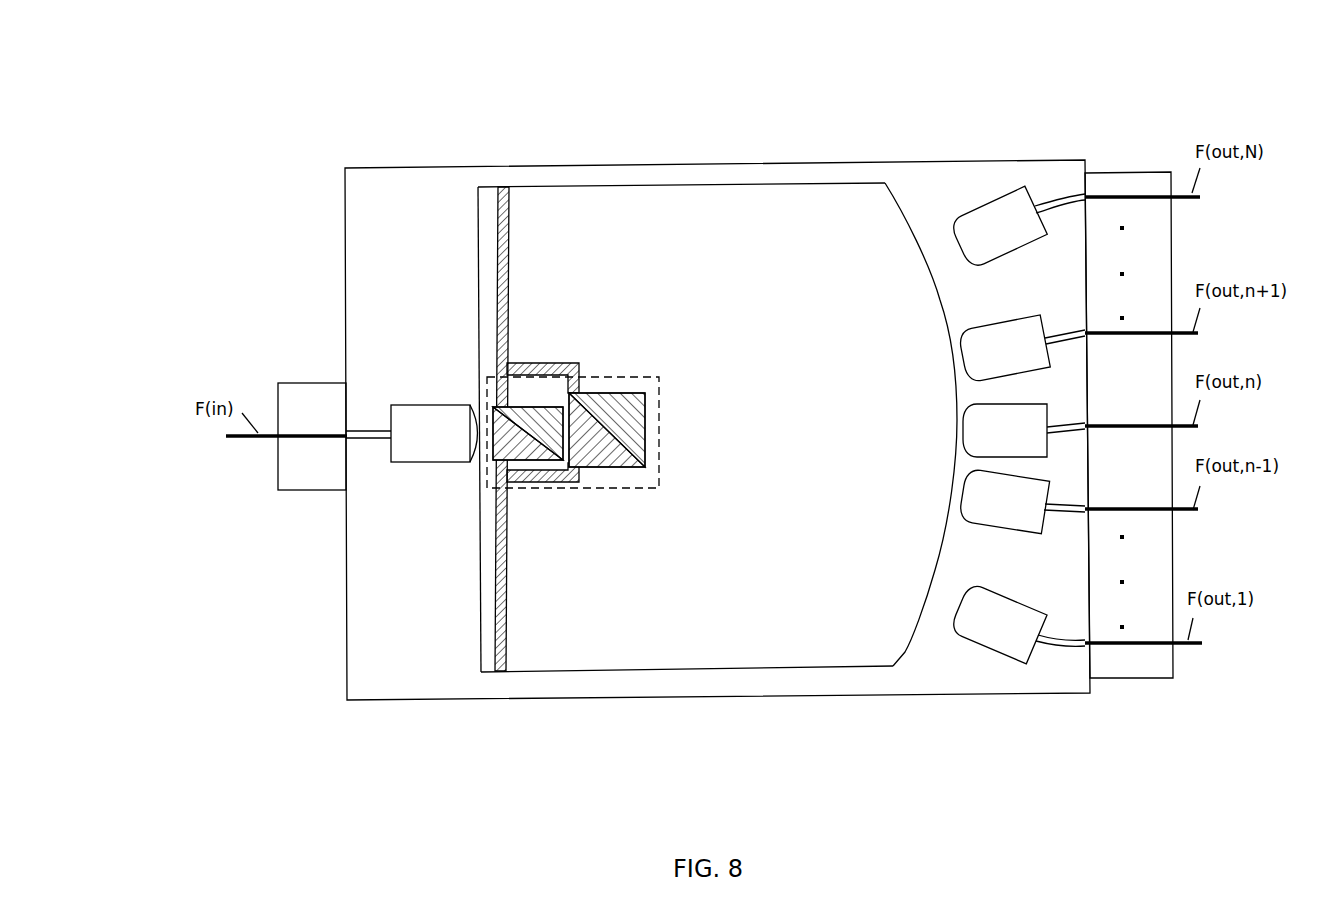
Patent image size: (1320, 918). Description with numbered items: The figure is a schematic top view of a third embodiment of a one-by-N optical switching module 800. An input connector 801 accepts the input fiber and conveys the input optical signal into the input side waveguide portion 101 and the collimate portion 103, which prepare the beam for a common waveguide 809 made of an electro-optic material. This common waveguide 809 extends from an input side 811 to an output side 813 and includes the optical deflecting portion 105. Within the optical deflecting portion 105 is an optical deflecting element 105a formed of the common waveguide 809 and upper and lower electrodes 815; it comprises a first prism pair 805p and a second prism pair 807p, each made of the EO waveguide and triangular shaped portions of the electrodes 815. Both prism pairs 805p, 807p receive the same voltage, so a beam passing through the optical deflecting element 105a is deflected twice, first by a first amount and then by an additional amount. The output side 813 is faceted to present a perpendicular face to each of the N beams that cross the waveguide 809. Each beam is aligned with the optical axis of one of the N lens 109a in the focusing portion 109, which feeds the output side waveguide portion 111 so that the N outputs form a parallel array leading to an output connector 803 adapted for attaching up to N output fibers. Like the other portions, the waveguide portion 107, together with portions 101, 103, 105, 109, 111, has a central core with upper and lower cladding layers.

The 1×N optical switching module 800 is at (325, 100).
The input side waveguide portion 101 is at (380, 155).
The collimate portion 103 is at (433, 155).
The optical deflecting portion 105 is at (537, 153).
The optical deflecting element 105a is at (618, 376).
The waveguide portion 107 is at (648, 187).
The focusing portion 109 is at (985, 147).
The lens 109a is at (963, 215).
The output side waveguide portion 111 is at (1112, 145).
The input connector 801 is at (288, 518).
The output connector 803 is at (1173, 692).
The first prism pair 805p is at (543, 517).
The second prism pair 807p is at (619, 517).
The common waveguide 809 is at (730, 670).
The input side 811 is at (480, 643).
The output side 813 is at (905, 652).
The electrodes 815 is at (508, 642).